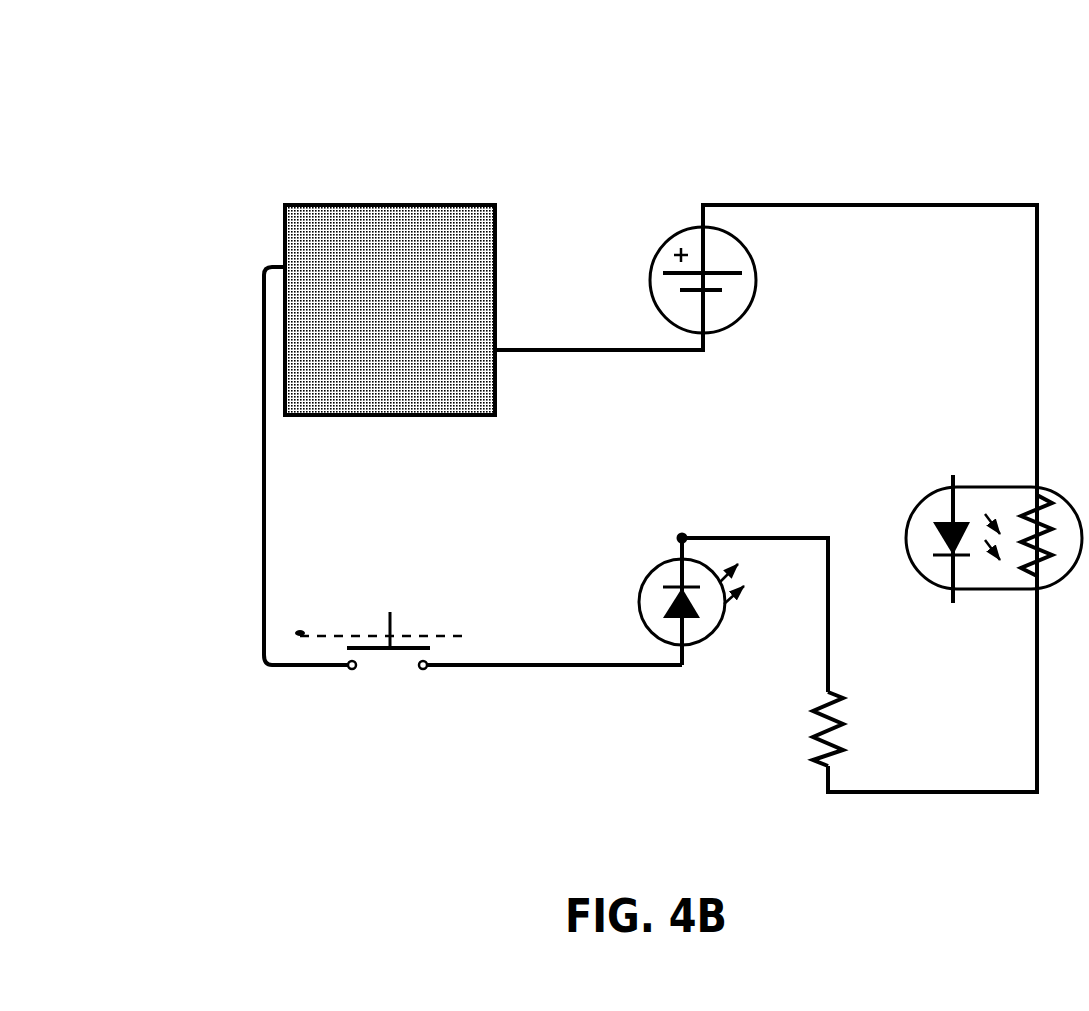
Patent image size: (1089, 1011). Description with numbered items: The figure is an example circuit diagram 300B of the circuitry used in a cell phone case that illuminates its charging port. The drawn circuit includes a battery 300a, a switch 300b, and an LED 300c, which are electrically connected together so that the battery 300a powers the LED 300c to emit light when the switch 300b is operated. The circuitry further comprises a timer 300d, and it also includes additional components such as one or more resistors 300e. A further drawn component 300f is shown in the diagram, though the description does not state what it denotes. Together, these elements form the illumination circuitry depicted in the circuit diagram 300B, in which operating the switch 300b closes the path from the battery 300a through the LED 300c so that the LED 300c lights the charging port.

The circuit diagram 300B is at (722, 88).
The resistor 300e is at (370, 163).
The battery 300a is at (667, 207).
The switch 300b is at (423, 582).
The LED 300c is at (635, 515).
The timer 300d is at (973, 457).
The resistor R2 300f is at (787, 736).